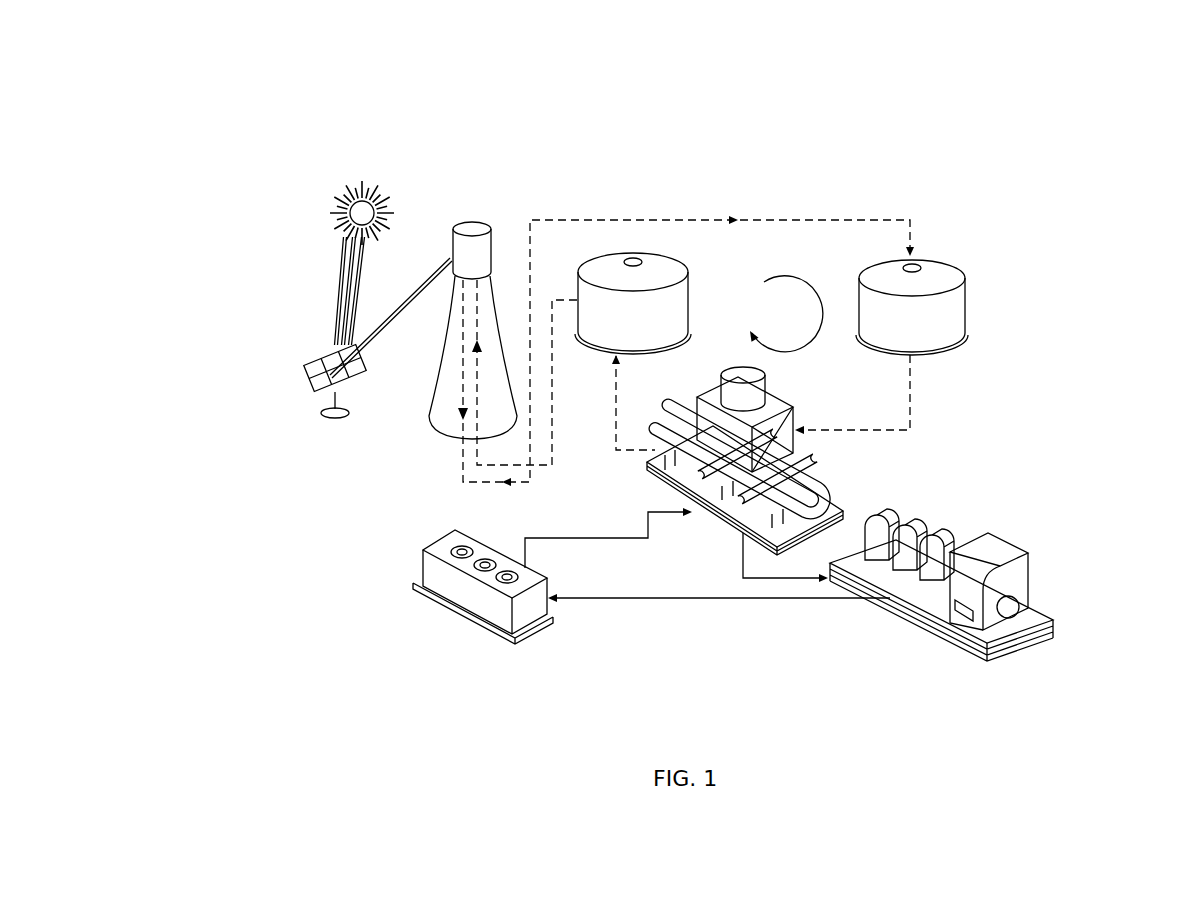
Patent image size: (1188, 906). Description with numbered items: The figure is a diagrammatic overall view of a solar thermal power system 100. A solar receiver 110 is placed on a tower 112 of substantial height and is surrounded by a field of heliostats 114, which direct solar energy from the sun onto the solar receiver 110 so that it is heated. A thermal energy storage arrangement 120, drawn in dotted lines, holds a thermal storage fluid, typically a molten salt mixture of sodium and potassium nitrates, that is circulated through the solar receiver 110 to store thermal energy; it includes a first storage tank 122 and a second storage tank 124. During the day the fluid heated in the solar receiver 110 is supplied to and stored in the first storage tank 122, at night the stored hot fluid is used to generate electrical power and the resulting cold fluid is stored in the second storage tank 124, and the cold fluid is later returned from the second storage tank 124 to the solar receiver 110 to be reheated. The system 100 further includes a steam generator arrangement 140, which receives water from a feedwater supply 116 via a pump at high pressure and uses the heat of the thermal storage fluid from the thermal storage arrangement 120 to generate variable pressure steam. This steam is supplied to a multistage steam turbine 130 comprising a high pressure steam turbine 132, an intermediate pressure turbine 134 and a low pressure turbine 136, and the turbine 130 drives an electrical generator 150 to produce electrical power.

The solar thermal power system 100 is at (978, 126).
The solar receiver 110 is at (466, 220).
The tower 112 is at (446, 384).
The heliostats 114 is at (312, 378).
The feedwater supply 116 is at (453, 575).
The thermal energy storage arrangement 120 is at (786, 314).
The first storage tank 122 is at (888, 268).
The second storage tank 124 is at (598, 270).
The multistage steam turbine 130 is at (893, 585).
The high pressure steam turbine 132 is at (898, 520).
The intermediate pressure turbine 134 is at (928, 535).
The low pressure turbine 136 is at (948, 541).
The steam generator arrangement 140 is at (828, 479).
The electrical generator 150 is at (1017, 580).